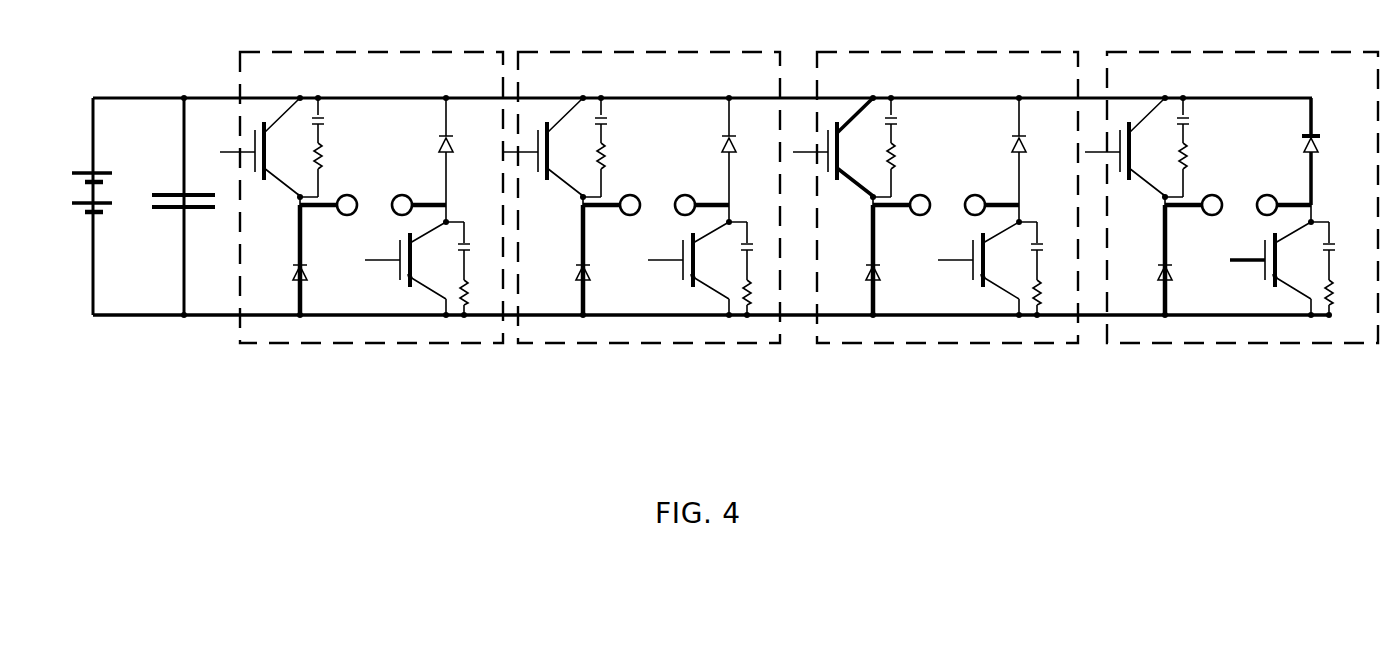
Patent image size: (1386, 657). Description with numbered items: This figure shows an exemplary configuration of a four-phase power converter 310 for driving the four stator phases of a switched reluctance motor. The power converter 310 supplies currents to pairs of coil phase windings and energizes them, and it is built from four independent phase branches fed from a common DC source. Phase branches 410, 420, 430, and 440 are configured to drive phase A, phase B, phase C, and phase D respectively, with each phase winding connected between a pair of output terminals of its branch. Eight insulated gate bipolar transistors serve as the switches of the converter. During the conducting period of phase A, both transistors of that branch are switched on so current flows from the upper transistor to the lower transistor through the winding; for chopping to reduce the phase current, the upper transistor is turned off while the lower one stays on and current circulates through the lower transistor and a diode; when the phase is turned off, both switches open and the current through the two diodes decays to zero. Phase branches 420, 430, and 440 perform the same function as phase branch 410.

The power converter 310 is at (1117, 447).
The phase branch 410 is at (393, 345).
The phase branch 420 is at (673, 345).
The phase branch 430 is at (970, 345).
The phase branch 440 is at (1263, 345).